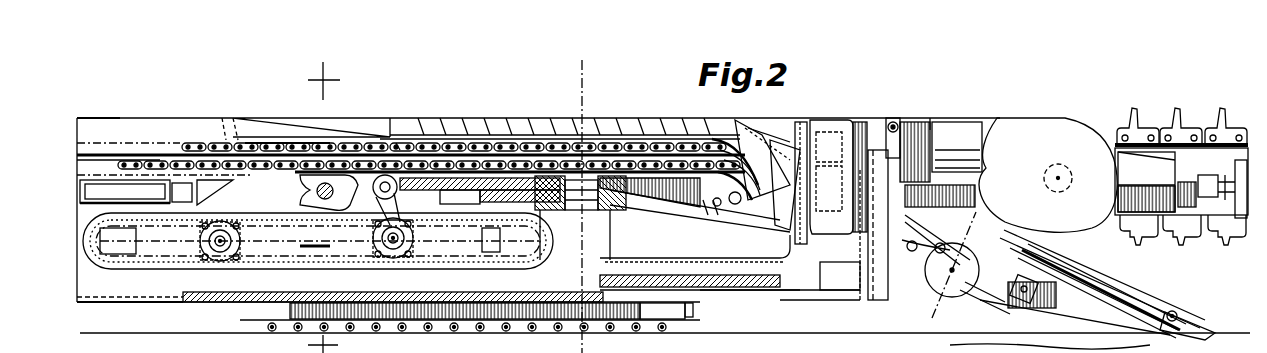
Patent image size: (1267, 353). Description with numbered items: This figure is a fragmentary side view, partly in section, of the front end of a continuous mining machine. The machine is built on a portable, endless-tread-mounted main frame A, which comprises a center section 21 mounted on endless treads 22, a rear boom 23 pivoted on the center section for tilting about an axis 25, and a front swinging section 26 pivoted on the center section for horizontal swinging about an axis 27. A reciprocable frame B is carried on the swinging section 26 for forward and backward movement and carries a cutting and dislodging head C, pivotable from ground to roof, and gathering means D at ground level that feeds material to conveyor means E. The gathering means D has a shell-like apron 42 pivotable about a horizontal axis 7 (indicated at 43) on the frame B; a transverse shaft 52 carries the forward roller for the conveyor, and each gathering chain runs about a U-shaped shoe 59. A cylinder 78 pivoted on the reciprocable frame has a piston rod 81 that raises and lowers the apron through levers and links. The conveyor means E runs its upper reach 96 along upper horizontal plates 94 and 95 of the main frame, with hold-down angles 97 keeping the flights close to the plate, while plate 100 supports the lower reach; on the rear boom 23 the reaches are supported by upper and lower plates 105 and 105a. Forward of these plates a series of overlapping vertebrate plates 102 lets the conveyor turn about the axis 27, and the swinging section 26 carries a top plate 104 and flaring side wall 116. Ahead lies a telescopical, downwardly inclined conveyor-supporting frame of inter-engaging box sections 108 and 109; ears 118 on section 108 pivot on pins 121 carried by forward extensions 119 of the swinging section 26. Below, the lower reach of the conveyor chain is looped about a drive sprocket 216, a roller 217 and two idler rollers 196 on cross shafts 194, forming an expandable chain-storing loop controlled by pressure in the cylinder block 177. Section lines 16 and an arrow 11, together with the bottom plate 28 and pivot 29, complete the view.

The main frame A is at (449, 112).
The reciprocable frame B is at (1004, 115).
The cutting and dislodging head C is at (1190, 112).
The gathering means D is at (1222, 276).
The conveyor means E is at (820, 118).
The horizontal axis 7- 7 is at (940, 320).
The arrow 11 is at (548, 210).
The section line 16- 16 is at (312, 91).
The center section 21 is at (695, 308).
The endless treads 22 is at (670, 332).
The rear boom 23 is at (92, 117).
The axis 25 is at (224, 135).
The front swinging section 26 is at (933, 118).
The axis 27 is at (590, 57).
The bottom plate 28 is at (795, 292).
The pivot 29 is at (1070, 165).
The apron 42 is at (1080, 310).
The axis 43 is at (975, 306).
The transverse shaft 52 is at (1028, 310).
The U-shaped shoe 59 is at (1070, 280).
The cylinder 78 is at (925, 150).
The piston rod 81 is at (870, 250).
The upper horizontal plate 94 is at (290, 140).
The upper horizontal plate 95 is at (400, 138).
The upper reach 96 is at (702, 132).
The hold-down angles 97 is at (708, 216).
The plate 100 is at (418, 135).
The vertebrate plates 102 is at (660, 114).
The top horizontal plate 104 is at (739, 162).
The upper plate 105 is at (133, 150).
The lower plate 105a is at (157, 165).
The box section 108 is at (771, 140).
The box section 109 is at (791, 147).
The flaring side wall 116 is at (738, 118).
The ear 118 is at (735, 225).
The forward extension 119 is at (650, 192).
The pivot pin 121 is at (720, 210).
The cylinder block 177 is at (356, 242).
The cross shaft 194 is at (393, 258).
The idler roller 196 is at (228, 260).
The drive sprocket 216 is at (300, 190).
The roller 217 is at (374, 203).